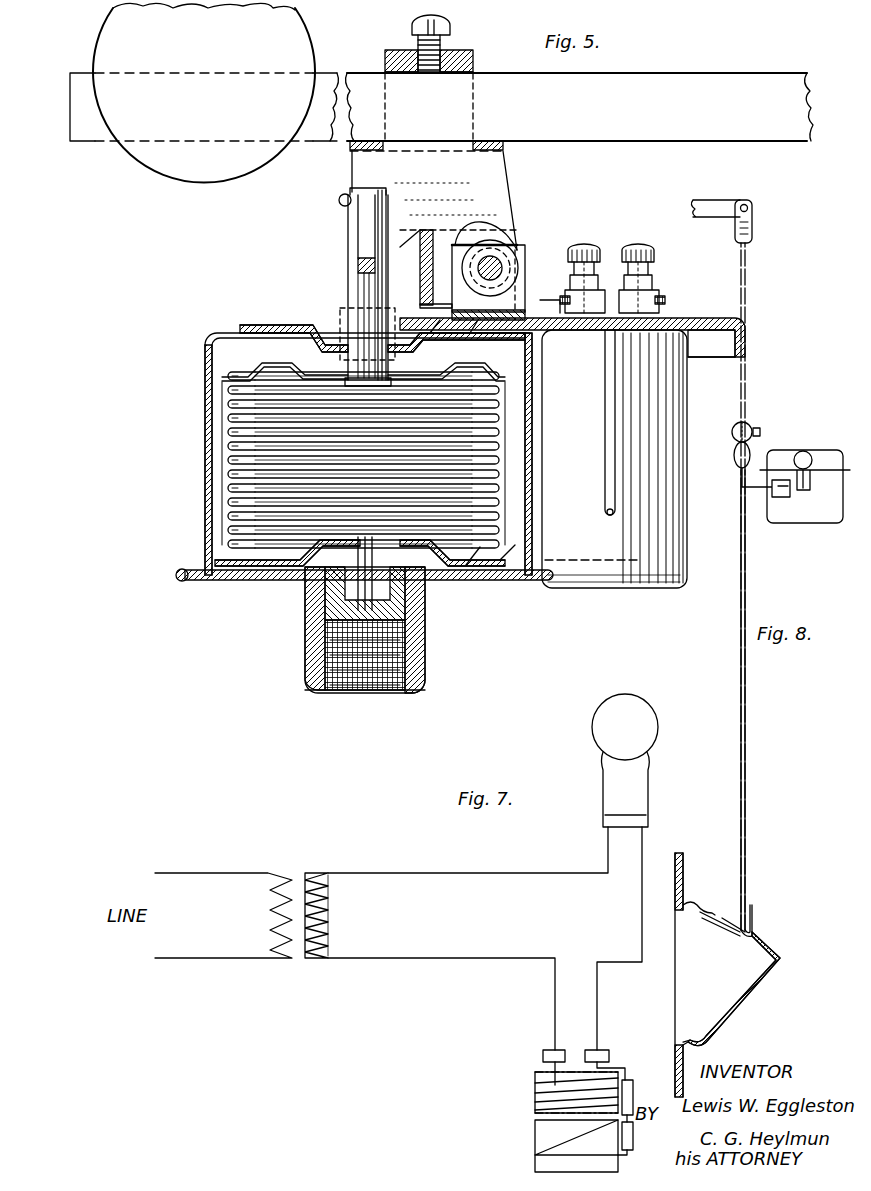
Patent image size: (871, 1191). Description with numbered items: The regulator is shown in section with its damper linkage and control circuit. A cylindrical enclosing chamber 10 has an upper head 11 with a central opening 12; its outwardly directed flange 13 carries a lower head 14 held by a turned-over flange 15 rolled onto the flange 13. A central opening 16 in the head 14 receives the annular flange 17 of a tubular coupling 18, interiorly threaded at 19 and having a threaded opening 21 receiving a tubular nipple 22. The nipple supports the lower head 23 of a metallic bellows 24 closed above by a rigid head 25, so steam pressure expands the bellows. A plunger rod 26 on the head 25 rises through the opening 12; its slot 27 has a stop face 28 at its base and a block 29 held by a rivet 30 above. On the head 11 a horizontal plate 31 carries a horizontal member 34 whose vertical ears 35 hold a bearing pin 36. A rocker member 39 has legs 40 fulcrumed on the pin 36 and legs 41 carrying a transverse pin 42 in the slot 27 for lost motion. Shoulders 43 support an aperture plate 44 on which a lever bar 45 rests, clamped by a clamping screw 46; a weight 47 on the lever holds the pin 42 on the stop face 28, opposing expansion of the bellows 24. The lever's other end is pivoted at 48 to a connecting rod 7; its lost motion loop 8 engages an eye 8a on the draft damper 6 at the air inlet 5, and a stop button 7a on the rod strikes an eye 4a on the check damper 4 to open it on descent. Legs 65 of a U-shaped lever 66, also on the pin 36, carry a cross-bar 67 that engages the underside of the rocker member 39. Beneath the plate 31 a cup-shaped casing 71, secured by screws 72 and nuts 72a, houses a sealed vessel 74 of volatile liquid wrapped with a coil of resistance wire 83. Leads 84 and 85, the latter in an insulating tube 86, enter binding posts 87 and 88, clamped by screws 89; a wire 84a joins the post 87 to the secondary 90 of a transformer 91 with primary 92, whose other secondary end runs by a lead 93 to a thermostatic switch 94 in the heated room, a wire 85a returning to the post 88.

In FIG. 8, the check damper 4 is at (815, 510).
In FIG. 8, the eye 4a is at (752, 458).
In FIG. 8, the air inlet 5 is at (760, 968).
In FIG. 8, the draft damper 6 is at (710, 905).
In FIG. 8, the connecting rod 7 is at (748, 740).
In FIG. 8, the stop button 7a is at (752, 425).
In FIG. 8, the lost motion loop 8 is at (755, 912).
In FIG. 8, the eye 8a is at (735, 930).
In FIG. 5, the cylindrical enclosing chamber 10 is at (205, 436).
In FIG. 5, the upper head 11 is at (215, 328).
In FIG. 5, the central opening 12 is at (330, 335).
In FIG. 5, the outwardly directed flange 13 is at (188, 580).
In FIG. 5, the lower head 14 is at (265, 572).
In FIG. 5, the turned-over flange 15 is at (180, 568).
In FIG. 5, the central opening 16 is at (308, 605).
In FIG. 5, the annular flange 17 is at (418, 590).
In FIG. 5, the tubular coupling 18 is at (425, 655).
In FIG. 5, the interior threads 19 is at (395, 688).
In FIG. 5, the central interiorly threaded opening 21 is at (425, 625).
In FIG. 5, the tubular nipple 22 is at (328, 635).
In FIG. 5, the lower head 23 is at (498, 580).
In FIG. 5, the metallic bellows 24 is at (222, 462).
In FIG. 5, the rigid head 25 is at (222, 368).
In FIG. 5, the plunger rod 26 is at (348, 300).
In FIG. 5, the slot 27 is at (358, 232).
In FIG. 5, the stop face 28 is at (358, 282).
In FIG. 5, the block 29 is at (352, 190).
In FIG. 5, the rivet 30 is at (339, 200).
In FIG. 5, the horizontal plate 31 is at (690, 320).
In FIG. 5, the horizontal member 34 is at (530, 313).
In FIG. 5, the vertical ears 35 is at (505, 275).
In FIG. 5, the bearing pin 36 is at (498, 255).
In FIG. 5, the rocker member 39 is at (434, 200).
In FIG. 5, the legs 40 is at (522, 242).
In FIG. 5, the legs 41 is at (420, 262).
In FIG. 5, the transverse pin 42 is at (362, 262).
In FIG. 5, the shoulders 43 is at (478, 152).
In FIG. 5, the aperture plate 44 is at (490, 145).
In FIG. 5, the lever bar 45 is at (705, 90).
In FIG. 8, the lever bar 45 is at (715, 213).
In FIG. 5, the clamping screw 46 is at (450, 29).
In FIG. 5, the weight 47 is at (165, 158).
In FIG. 8, the pivotal connection 48 is at (752, 208).
In FIG. 5, the legs 65 is at (535, 300).
In FIG. 5, the U-shaped lever 66 is at (472, 328).
In FIG. 5, the cross-bar 67 is at (438, 328).
In FIG. 5, the cup-shaped casing 71 is at (688, 576).
In FIG. 5, the screws 72 is at (650, 320).
In FIG. 5, the nuts 72a is at (690, 358).
In FIG. 7, the sealed cylindrical vessel 74 is at (540, 1140).
In FIG. 7, the coil of resistance wire 83 is at (540, 1095).
In FIG. 7, the circuit lead wire 84 is at (535, 1074).
In FIG. 7, the wire 84a is at (430, 958).
In FIG. 7, the lead 85 is at (618, 1070).
In FIG. 7, the wire 85a is at (640, 924).
In FIG. 7, the insulating tube 86 is at (630, 1140).
In FIG. 5, the binding post 87 is at (603, 255).
In FIG. 7, the binding post 87 is at (548, 1050).
In FIG. 5, the binding post 88 is at (600, 315).
In FIG. 7, the binding post 88 is at (600, 1050).
In FIG. 5, the screws 89 is at (560, 320).
In FIG. 7, the secondary 90 is at (330, 912).
In FIG. 7, the transformer 91 is at (297, 875).
In FIG. 7, the primary 92 is at (272, 940).
In FIG. 7, the lead 93 is at (400, 874).
In FIG. 7, the thermostatic switch 94 is at (628, 712).